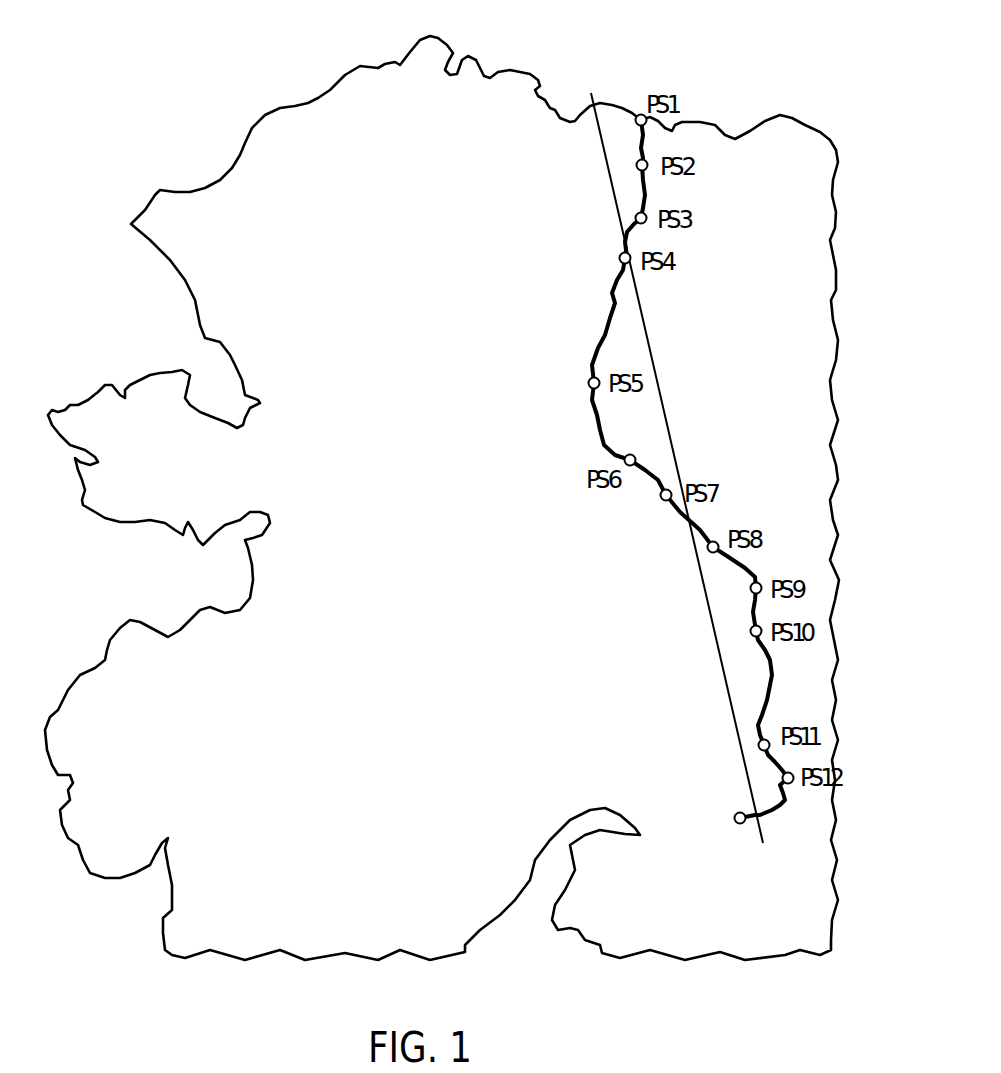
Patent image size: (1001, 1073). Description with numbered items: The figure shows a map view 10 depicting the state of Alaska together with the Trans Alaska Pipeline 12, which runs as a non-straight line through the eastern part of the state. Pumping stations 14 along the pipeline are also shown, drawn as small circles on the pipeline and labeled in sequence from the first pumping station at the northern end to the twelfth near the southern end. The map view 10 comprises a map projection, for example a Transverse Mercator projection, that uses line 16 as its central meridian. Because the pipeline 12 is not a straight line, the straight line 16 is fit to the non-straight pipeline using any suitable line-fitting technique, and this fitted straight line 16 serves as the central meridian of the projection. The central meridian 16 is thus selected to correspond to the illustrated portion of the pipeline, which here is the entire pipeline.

The map view 10 is at (732, 96).
The Trans Alaska Pipeline 12 is at (768, 676).
The pumping stations 14 is at (750, 632).
The central meridian line 16 is at (602, 151).